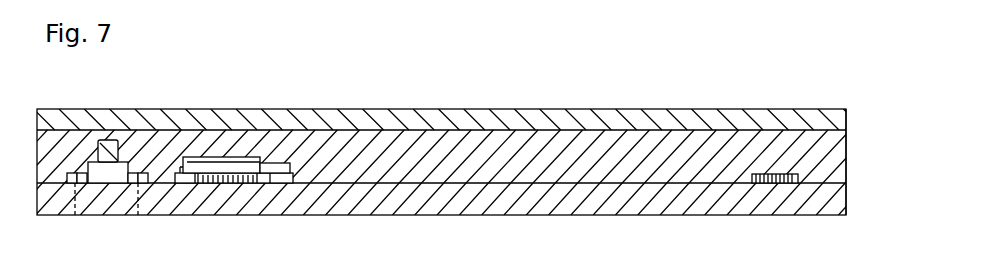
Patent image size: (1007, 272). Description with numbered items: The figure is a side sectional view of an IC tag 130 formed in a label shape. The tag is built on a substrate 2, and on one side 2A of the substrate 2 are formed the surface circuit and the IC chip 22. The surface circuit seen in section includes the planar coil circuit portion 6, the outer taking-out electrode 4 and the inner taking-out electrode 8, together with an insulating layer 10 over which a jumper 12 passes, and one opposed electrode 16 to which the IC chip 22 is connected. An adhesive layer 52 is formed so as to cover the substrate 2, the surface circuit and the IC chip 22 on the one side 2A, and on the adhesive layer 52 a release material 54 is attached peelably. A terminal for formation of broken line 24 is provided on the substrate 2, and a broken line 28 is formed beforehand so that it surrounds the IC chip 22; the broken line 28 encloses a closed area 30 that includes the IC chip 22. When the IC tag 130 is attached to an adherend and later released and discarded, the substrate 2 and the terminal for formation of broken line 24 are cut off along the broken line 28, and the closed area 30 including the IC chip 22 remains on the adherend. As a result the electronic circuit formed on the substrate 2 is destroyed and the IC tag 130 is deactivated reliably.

The substrate 2 is at (464, 214).
The one side of substrate 2A is at (847, 163).
The outer taking-out electrode 4 is at (188, 180).
The planar coil circuit portion 6 is at (752, 182).
The inner taking-out electrode 8 is at (276, 180).
The insulating layer 10 is at (220, 167).
The jumper 12 is at (280, 163).
The one opposed electrode 16 is at (133, 170).
The IC chip 22 is at (118, 161).
The terminal for formation of broken line 24 is at (81, 181).
The broken line 28 is at (74, 190).
The closed area 30 is at (138, 220).
The adhesive layer 52 is at (632, 150).
The release material 54 is at (742, 122).
The IC tag 130 is at (500, 97).